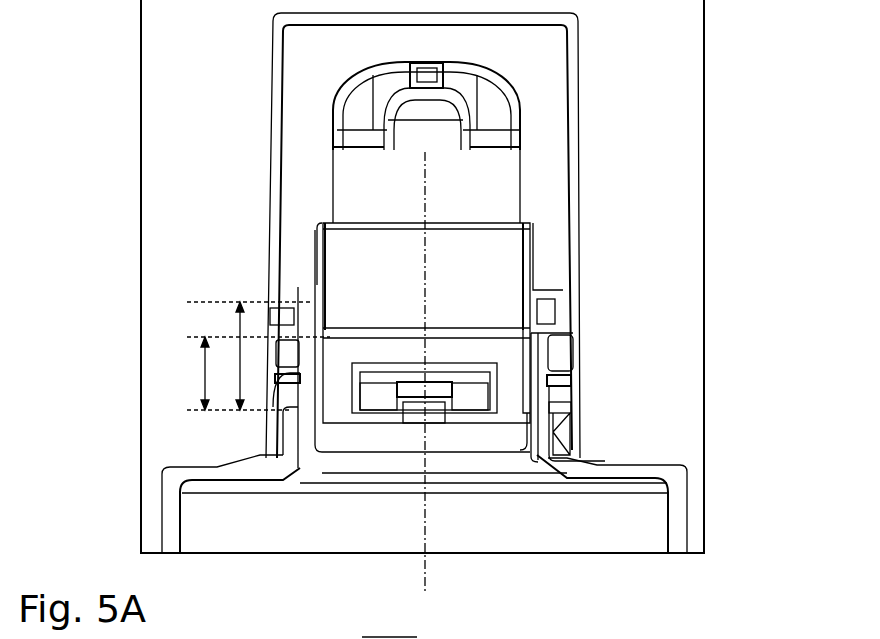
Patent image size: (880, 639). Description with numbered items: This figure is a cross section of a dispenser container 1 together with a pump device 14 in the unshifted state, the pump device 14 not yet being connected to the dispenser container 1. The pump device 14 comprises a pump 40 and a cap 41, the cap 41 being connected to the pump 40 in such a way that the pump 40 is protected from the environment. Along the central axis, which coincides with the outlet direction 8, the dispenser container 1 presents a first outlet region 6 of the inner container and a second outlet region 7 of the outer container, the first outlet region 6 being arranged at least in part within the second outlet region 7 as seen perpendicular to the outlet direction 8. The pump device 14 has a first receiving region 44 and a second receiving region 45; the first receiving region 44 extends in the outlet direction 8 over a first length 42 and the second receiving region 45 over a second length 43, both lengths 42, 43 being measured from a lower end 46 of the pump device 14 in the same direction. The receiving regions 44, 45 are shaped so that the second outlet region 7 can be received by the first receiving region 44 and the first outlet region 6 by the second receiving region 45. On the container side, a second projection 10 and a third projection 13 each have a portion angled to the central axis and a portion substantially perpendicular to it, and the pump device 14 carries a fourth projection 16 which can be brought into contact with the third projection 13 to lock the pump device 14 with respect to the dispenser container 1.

The dispenser container 1 is at (653, 443).
The first outlet region 6 is at (307, 373).
The second outlet region 7 is at (273, 437).
The outlet direction 8 is at (432, 192).
The second projection 10 is at (565, 373).
The third projection 13 is at (562, 413).
The pump device 14 is at (742, 106).
The fourth projection 16 is at (572, 393).
The pump 40 is at (340, 202).
The cap 41 is at (272, 100).
The first length 42 is at (205, 373).
The second length 43 is at (240, 318).
The first receiving region 44 is at (275, 385).
The second receiving region 45 is at (315, 308).
The lower end 46 is at (283, 400).